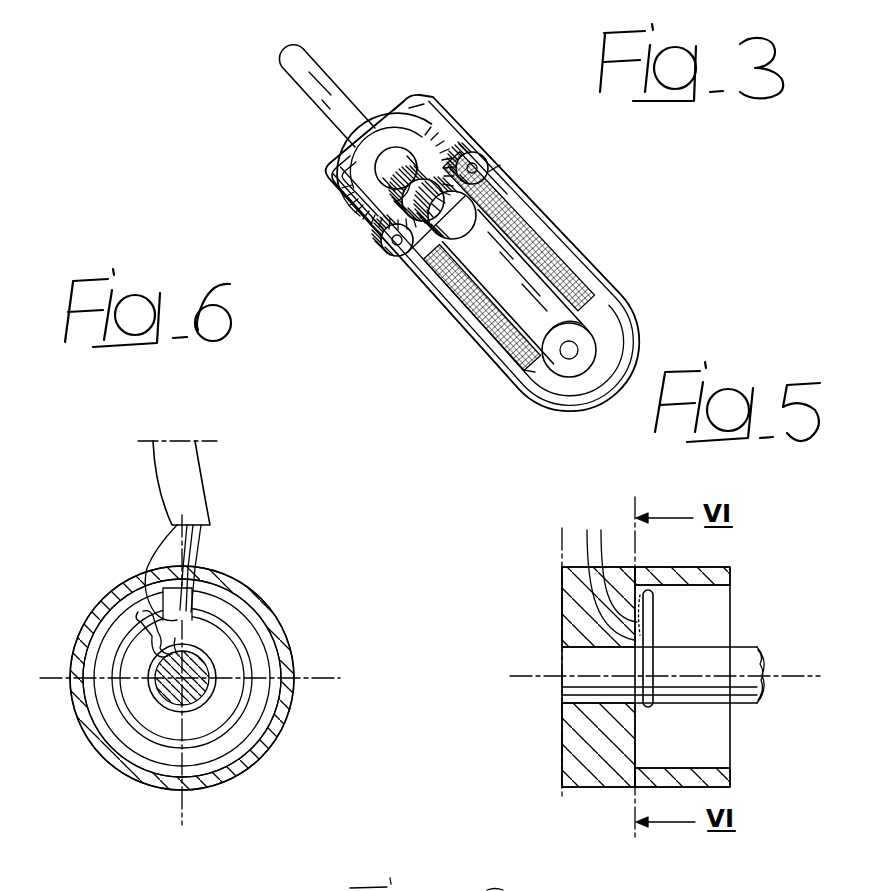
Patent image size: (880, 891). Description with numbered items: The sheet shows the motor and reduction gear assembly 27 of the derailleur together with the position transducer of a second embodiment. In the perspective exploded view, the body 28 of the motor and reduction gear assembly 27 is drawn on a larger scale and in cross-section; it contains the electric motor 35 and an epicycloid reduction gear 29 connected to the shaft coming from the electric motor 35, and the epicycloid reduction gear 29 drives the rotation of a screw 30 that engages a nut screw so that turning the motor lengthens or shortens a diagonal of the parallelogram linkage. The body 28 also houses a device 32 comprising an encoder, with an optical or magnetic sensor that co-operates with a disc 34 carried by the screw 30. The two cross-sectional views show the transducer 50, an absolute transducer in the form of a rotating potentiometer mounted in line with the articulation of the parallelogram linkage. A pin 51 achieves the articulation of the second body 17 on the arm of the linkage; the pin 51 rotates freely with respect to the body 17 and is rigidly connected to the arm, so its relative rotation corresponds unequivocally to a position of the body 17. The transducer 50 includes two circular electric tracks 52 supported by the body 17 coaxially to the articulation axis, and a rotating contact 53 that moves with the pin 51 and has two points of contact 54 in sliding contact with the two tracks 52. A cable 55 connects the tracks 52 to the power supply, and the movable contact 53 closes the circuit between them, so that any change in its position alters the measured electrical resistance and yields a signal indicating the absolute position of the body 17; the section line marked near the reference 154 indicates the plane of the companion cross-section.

In FIG. 5, the second body of the derailleur 17 is at (583, 735).
In FIG. 3, the motor and reduction gear assembly 27 is at (477, 374).
In FIG. 3, the body of the motor and reduction gear assembly 28 is at (594, 264).
In FIG. 3, the epicycloid reduction gear 29 is at (399, 250).
In FIG. 3, the screw 30 is at (309, 82).
In FIG. 3, the device comprising an encoder 32 is at (338, 212).
In FIG. 3, the disc 34 is at (350, 172).
In FIG. 3, the electric motor 35 is at (447, 290).
In FIG. 6, the transducer 50 is at (131, 773).
In FIG. 5, the transducer 50 is at (699, 613).
In FIG. 5, the pin 51 is at (743, 693).
In FIG. 6, the circular electric tracks 52 is at (125, 665).
In FIG. 5, the circular electric tracks 52 is at (638, 723).
In FIG. 6, the rotating contact 53 is at (247, 618).
In FIG. 5, the points of contact 54 is at (613, 570).
In FIG. 6, the cable 55 is at (198, 478).
In FIG. 5, the axis 154 is at (520, 676).